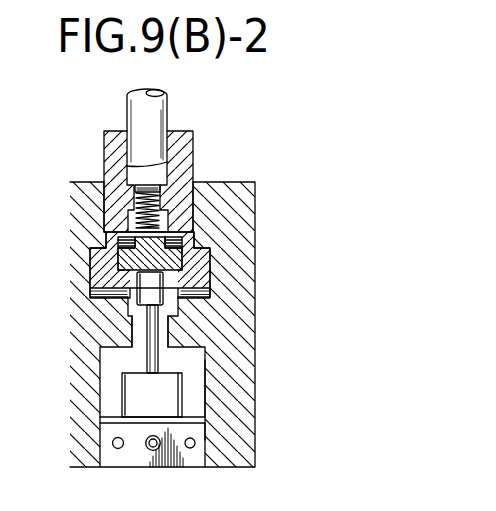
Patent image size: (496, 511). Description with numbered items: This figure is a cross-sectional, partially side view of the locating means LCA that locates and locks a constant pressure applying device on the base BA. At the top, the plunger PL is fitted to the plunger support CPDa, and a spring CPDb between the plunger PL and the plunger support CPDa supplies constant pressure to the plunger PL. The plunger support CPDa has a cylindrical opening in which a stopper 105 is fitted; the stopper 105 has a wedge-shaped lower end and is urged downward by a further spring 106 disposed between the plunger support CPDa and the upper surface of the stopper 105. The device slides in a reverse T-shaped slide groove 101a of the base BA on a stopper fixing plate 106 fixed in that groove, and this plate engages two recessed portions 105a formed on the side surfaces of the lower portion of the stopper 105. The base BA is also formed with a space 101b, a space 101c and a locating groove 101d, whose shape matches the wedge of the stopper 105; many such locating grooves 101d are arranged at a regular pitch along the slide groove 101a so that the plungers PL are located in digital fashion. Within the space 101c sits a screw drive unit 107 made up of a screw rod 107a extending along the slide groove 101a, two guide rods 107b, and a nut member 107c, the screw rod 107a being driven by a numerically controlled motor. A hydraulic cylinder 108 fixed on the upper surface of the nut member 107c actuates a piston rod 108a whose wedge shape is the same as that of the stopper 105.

The plunger PL is at (155, 105).
The plunger support CPDa is at (185, 143).
The spring CPDb is at (160, 190).
The base BA is at (247, 193).
The locating means LCA is at (270, 213).
The spring / stopper fixing plate 106 is at (118, 242).
The stopper 105 is at (120, 262).
The recessed portions 105a is at (183, 292).
The piston rod 108a is at (147, 288).
The hydraulic cylinder 108 is at (132, 395).
The screw rod 107a is at (143, 438).
The screw drive unit 107 is at (189, 459).
The guide rods 107b is at (196, 443).
The nut member 107c is at (200, 430).
The reverse T-shaped slide groove 101a is at (202, 265).
The space 101b is at (196, 382).
The space 101c is at (194, 408).
The locating groove 101d is at (169, 333).